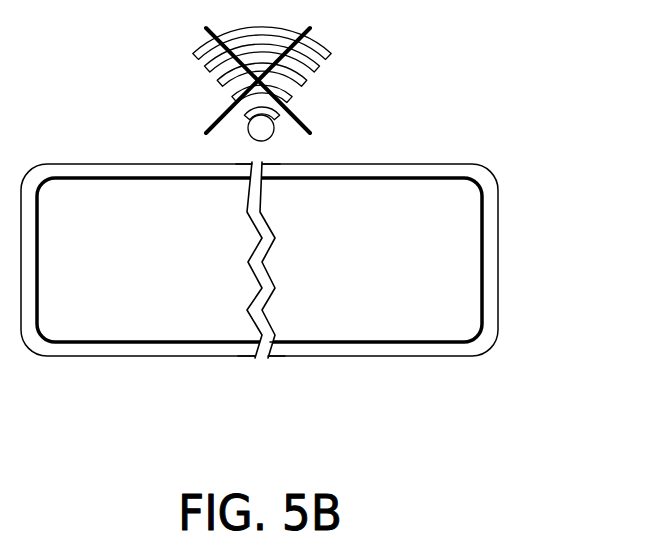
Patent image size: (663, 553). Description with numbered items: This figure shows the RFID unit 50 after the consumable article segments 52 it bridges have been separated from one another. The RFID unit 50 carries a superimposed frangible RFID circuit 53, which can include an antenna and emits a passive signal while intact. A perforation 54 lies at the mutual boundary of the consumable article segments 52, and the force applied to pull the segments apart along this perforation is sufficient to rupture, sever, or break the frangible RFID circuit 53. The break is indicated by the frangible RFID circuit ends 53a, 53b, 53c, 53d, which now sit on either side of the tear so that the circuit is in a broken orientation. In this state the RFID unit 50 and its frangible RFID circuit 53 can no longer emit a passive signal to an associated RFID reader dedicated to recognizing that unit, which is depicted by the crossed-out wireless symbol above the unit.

The RFID unit 50 is at (321, 230).
The consumable article segments 52 is at (426, 190).
The frangible RFID circuit 53 is at (93, 178).
The frangible RFID circuit end 53a is at (261, 177).
The frangible RFID circuit end 53b is at (254, 334).
The frangible RFID circuit end 53c is at (270, 178).
The frangible RFID circuit end 53d is at (270, 341).
The perforation 54 is at (277, 282).